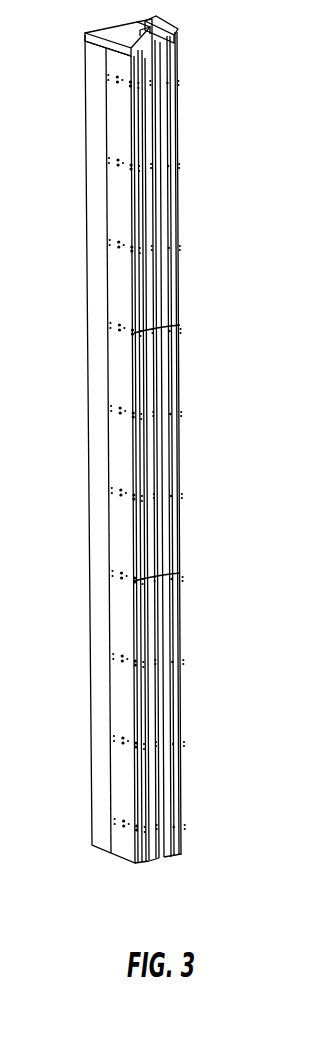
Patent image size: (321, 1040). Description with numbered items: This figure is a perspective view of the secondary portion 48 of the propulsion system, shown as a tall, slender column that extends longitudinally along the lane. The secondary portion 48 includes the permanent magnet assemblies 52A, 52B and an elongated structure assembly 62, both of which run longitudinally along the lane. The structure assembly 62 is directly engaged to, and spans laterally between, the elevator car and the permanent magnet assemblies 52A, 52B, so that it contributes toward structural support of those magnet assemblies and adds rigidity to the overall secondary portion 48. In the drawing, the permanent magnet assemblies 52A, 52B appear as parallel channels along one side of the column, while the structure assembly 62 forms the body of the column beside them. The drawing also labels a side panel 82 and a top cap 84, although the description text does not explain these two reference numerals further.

The secondary portion 48 is at (243, 45).
The top cap 84 is at (160, 28).
The side panel 82 is at (86, 121).
The structure assembly 62 is at (82, 422).
The permanent magnet assembly 52A is at (152, 863).
The permanent magnet assembly 52B is at (170, 858).